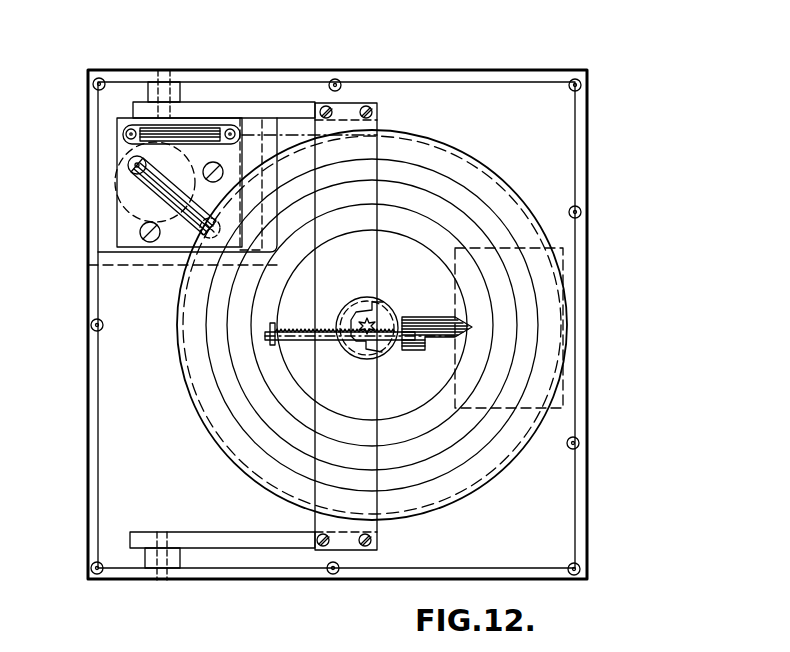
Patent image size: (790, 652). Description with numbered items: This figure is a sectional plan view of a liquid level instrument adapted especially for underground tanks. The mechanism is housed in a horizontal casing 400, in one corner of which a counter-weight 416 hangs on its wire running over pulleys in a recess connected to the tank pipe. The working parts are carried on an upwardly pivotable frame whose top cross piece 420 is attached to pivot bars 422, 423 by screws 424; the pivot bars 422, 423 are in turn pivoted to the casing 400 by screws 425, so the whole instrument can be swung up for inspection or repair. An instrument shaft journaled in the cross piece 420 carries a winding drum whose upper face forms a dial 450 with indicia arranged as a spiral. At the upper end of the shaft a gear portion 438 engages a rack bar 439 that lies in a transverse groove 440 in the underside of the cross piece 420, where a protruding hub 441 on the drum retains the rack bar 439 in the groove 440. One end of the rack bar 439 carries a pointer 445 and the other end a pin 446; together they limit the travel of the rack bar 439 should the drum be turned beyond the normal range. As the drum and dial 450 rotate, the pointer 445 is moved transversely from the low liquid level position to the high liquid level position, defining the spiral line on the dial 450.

The horizontal casing 400 is at (208, 72).
The counter-weight 416 is at (132, 190).
The top cross piece 420 is at (358, 162).
The pivot bar 422 is at (248, 107).
The pivot bar 423 is at (240, 542).
The screws 424 is at (367, 108).
The screws 425 is at (165, 78).
The gear portion 438 is at (373, 322).
The rack bar 439 is at (303, 342).
The transverse groove 440 is at (218, 232).
The protruding hub 441 is at (380, 352).
The pointer 445 is at (463, 317).
The pin 446 is at (273, 343).
The dial 450 is at (460, 497).